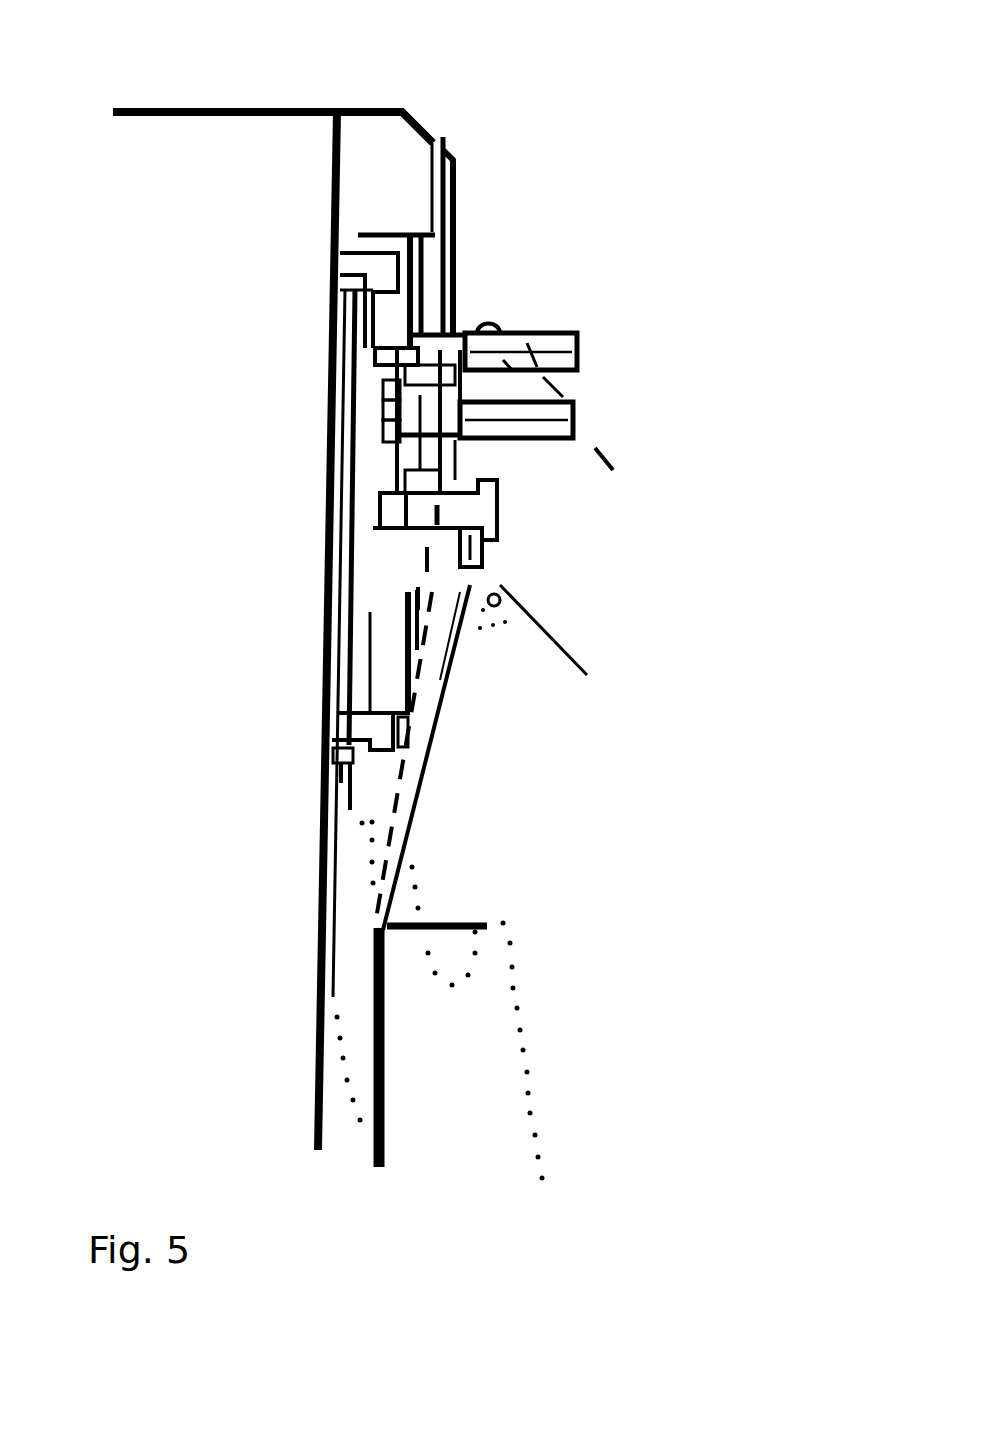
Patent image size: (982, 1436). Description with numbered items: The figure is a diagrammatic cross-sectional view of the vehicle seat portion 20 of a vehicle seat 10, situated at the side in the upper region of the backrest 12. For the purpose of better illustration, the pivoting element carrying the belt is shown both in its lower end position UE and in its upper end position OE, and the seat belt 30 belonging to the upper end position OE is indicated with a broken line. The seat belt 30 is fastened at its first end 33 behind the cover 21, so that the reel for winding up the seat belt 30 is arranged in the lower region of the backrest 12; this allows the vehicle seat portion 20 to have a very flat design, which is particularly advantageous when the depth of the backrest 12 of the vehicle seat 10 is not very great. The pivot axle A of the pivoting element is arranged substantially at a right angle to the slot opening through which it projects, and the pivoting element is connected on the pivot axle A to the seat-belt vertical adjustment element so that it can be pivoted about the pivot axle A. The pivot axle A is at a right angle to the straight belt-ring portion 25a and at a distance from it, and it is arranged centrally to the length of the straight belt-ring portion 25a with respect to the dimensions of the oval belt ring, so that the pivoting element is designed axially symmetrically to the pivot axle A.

The vehicle seat 10 is at (178, 98).
The backrest 12 is at (257, 110).
The vehicle seat portion 20 is at (417, 127).
The cover 21 is at (460, 922).
The straight belt-ring portion 25a is at (495, 327).
The seat belt 30 is at (610, 453).
The first end 33 is at (387, 1017).
The pivot axle A is at (500, 510).
The upper end position OE is at (608, 353).
The lower end position UE is at (515, 593).